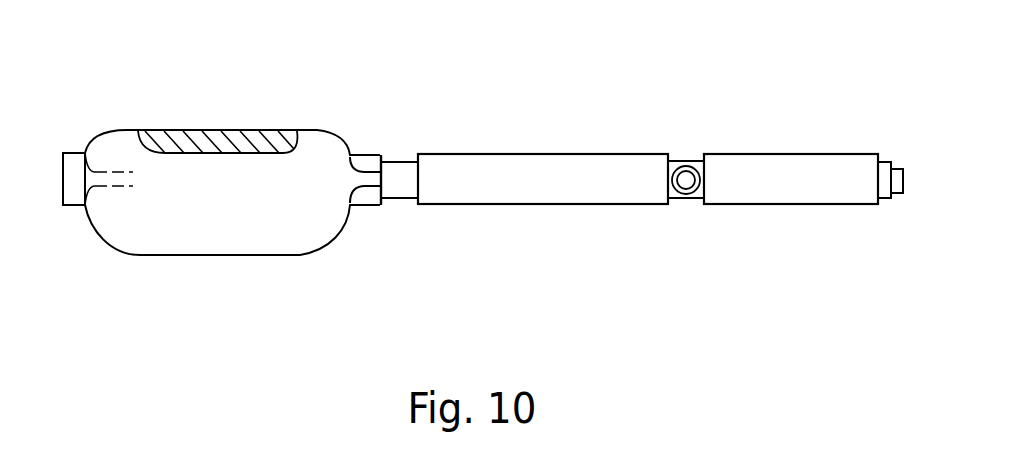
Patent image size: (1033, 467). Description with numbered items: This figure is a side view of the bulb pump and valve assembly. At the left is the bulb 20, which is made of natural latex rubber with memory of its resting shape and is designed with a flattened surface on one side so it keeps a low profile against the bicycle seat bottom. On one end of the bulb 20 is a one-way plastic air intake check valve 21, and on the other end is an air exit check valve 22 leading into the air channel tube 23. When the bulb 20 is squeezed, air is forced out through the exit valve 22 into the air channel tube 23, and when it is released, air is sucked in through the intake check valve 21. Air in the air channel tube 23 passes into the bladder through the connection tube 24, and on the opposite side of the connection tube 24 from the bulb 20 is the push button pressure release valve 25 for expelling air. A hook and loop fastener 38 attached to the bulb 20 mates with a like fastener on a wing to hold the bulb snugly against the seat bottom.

The bulb 20 is at (322, 150).
The air intake check valve 21 is at (75, 195).
The air exit check valve 22 is at (368, 197).
The air channel tube 23 is at (572, 183).
The connection tube 24 is at (685, 165).
The pressure release valve 25 is at (783, 195).
The hook and loop fastener 38 is at (168, 133).